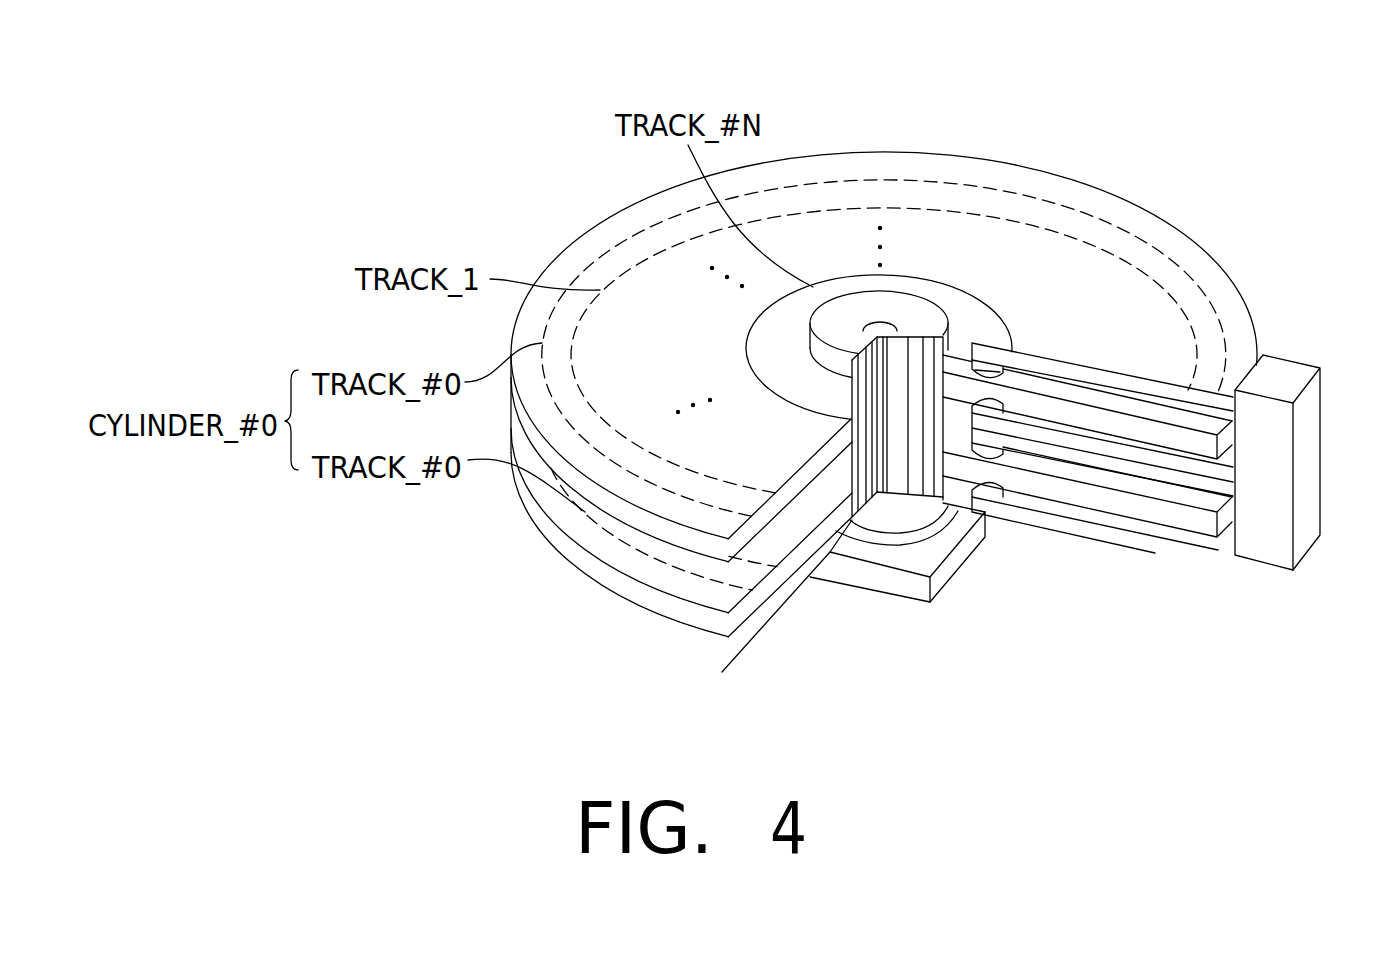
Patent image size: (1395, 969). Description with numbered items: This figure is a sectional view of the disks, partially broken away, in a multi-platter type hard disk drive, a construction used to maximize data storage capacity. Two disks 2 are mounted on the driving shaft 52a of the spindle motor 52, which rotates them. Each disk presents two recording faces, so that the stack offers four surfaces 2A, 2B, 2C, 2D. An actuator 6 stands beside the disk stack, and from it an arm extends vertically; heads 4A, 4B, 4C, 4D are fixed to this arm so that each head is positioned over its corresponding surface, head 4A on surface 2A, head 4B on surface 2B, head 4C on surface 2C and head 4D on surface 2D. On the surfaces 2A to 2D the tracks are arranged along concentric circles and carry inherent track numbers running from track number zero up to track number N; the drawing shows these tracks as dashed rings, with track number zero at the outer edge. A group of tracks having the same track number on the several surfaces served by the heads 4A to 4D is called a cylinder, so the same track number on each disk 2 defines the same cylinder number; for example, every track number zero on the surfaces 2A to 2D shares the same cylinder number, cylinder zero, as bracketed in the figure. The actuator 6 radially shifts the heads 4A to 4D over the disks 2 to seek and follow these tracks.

The disk 2 is at (1142, 205).
The disk surface 2A is at (803, 478).
The disk surface 2B is at (818, 541).
The disk surface 2C is at (681, 521).
The disk surface 2D is at (823, 457).
The head 4A is at (985, 370).
The head 4B is at (990, 407).
The head 4C is at (990, 448).
The head 4D is at (990, 487).
The actuator 6 is at (1307, 459).
The spindle motor 52 is at (902, 583).
The driving shaft 52a is at (878, 320).